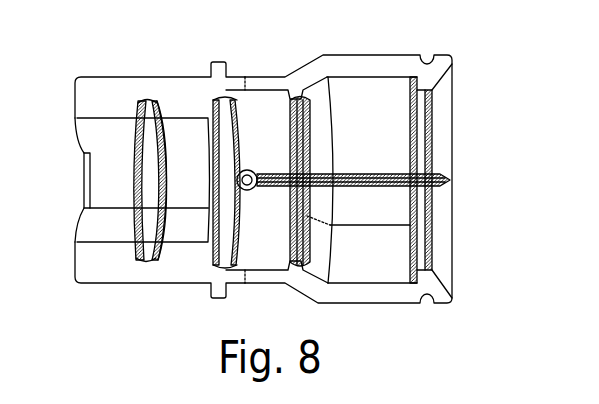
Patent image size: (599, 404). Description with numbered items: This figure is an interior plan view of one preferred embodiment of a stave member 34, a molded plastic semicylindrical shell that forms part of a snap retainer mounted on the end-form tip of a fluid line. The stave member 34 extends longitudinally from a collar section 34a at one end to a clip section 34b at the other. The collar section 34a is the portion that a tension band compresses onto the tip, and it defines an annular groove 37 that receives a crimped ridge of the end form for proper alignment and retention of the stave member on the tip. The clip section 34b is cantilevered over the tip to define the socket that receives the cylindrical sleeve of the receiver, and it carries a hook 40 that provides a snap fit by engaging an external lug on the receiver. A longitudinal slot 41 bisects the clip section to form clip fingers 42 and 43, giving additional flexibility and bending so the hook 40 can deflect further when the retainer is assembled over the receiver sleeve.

The stave member 34 is at (298, 63).
The collar section 34a is at (103, 77).
The clip section 34b is at (410, 56).
The annular groove 37 is at (143, 100).
The hook 40 is at (422, 248).
The longitudinal slot 41 is at (455, 178).
The clip finger 42 is at (387, 122).
The clip finger 43 is at (397, 205).